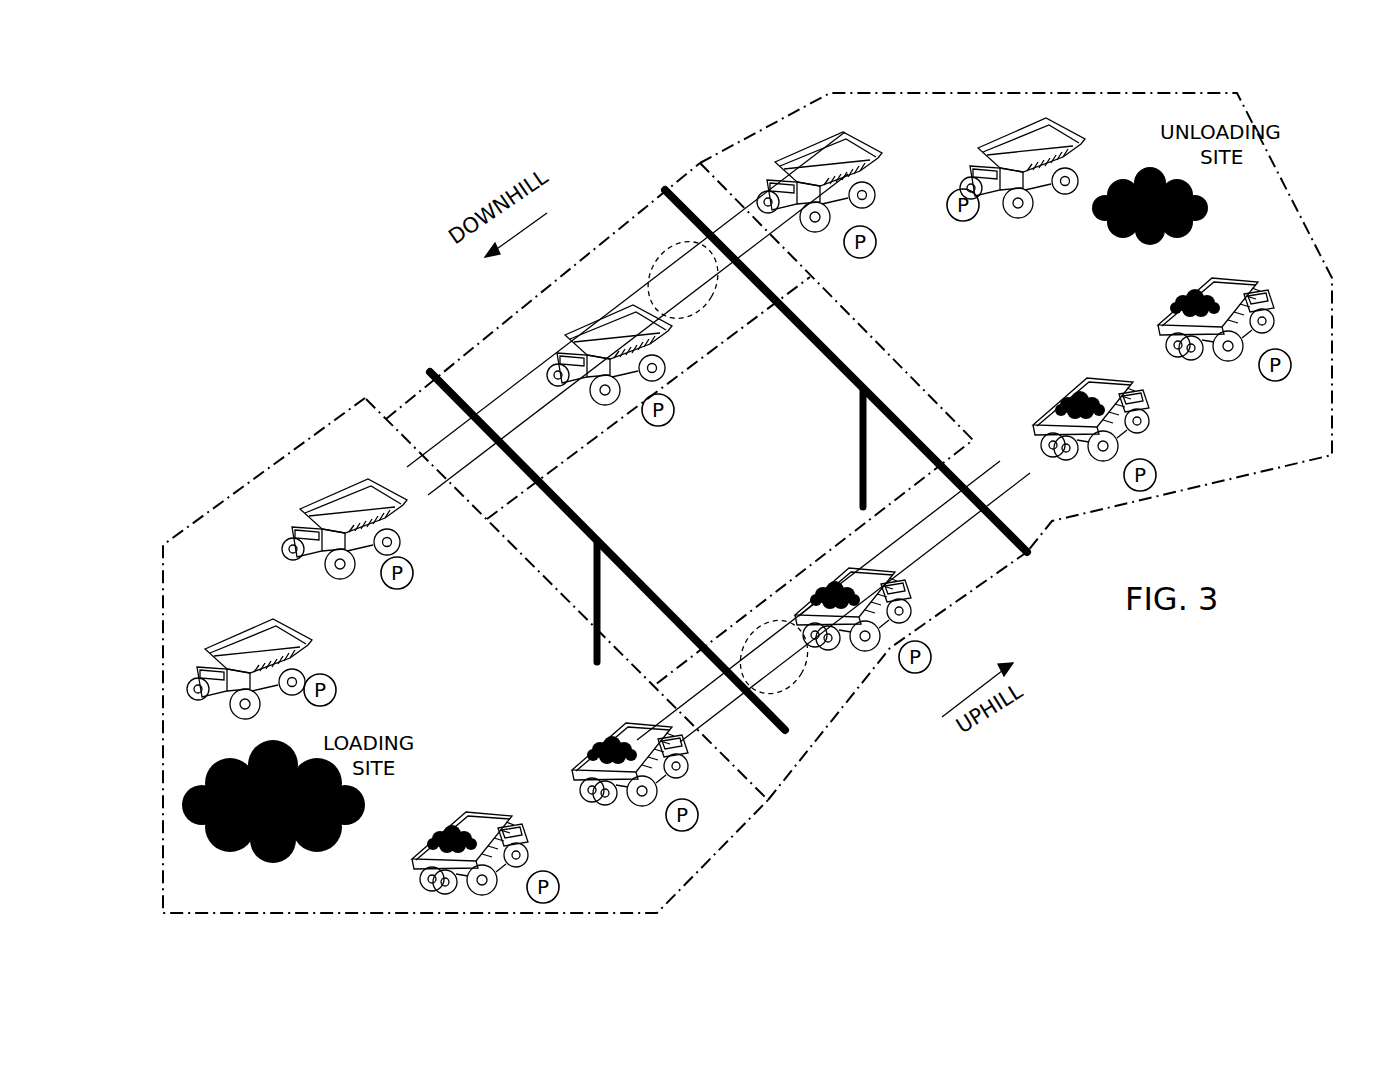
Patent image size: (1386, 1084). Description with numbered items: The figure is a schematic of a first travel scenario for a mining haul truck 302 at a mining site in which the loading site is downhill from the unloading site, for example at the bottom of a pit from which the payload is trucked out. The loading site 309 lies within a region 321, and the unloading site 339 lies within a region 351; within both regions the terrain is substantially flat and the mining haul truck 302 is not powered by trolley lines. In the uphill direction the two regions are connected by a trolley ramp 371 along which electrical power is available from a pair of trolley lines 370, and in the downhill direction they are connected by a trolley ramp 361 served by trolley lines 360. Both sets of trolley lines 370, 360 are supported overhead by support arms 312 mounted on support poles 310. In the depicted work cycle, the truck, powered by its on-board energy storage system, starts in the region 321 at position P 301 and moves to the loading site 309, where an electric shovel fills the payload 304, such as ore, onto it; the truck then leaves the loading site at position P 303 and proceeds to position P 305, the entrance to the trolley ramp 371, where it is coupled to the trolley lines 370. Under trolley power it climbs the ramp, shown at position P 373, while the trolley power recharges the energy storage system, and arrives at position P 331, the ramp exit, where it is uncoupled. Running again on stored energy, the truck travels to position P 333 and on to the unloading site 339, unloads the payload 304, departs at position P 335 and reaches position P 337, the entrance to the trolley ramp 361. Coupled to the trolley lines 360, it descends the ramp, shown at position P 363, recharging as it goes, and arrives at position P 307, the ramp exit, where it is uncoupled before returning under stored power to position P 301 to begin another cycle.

The position P 301 is at (337, 687).
The mining haul truck 302 is at (845, 150).
The position P 303 is at (560, 878).
The payload 304 is at (1176, 305).
The position P 305 is at (672, 828).
The position P 307 is at (408, 588).
The loading site 309 is at (272, 863).
The support poles 310 is at (862, 458).
The support arms 312 is at (843, 365).
The region 321 is at (293, 450).
The position P 331 is at (1158, 471).
The position P 333 is at (1275, 383).
The position P 335 is at (968, 222).
The position P 337 is at (865, 257).
The unloading site 339 is at (1140, 243).
The region 351 is at (753, 134).
The trolley lines 360 is at (657, 253).
The trolley ramp 361 is at (507, 345).
The position P 363 is at (668, 422).
The trolley lines 370 is at (802, 688).
The trolley ramp 371 is at (973, 587).
The position P 373 is at (933, 657).